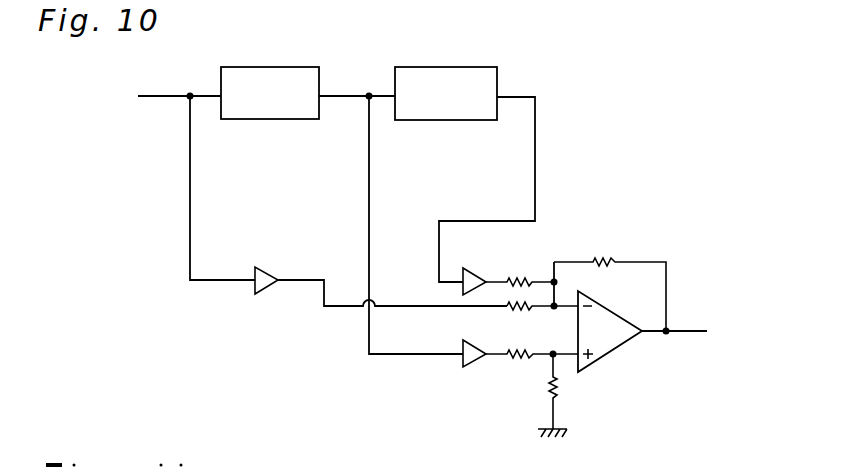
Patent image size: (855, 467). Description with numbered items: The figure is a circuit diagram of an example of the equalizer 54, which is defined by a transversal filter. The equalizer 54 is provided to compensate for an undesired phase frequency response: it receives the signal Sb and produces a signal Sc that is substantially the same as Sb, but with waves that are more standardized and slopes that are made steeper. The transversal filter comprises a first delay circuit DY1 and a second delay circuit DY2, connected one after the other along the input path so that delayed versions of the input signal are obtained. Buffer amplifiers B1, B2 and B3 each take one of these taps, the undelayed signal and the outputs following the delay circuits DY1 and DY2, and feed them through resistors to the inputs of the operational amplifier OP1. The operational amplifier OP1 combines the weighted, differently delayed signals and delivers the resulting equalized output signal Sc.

The equalizer 54 is at (577, 160).
The first delay circuit DY1 is at (270, 112).
The second delay circuit DY2 is at (445, 112).
The buffer amplifier B1 is at (268, 265).
The buffer amplifier B2 is at (465, 289).
The buffer amplifier B3 is at (463, 363).
The operational amplifier OP1 is at (613, 337).